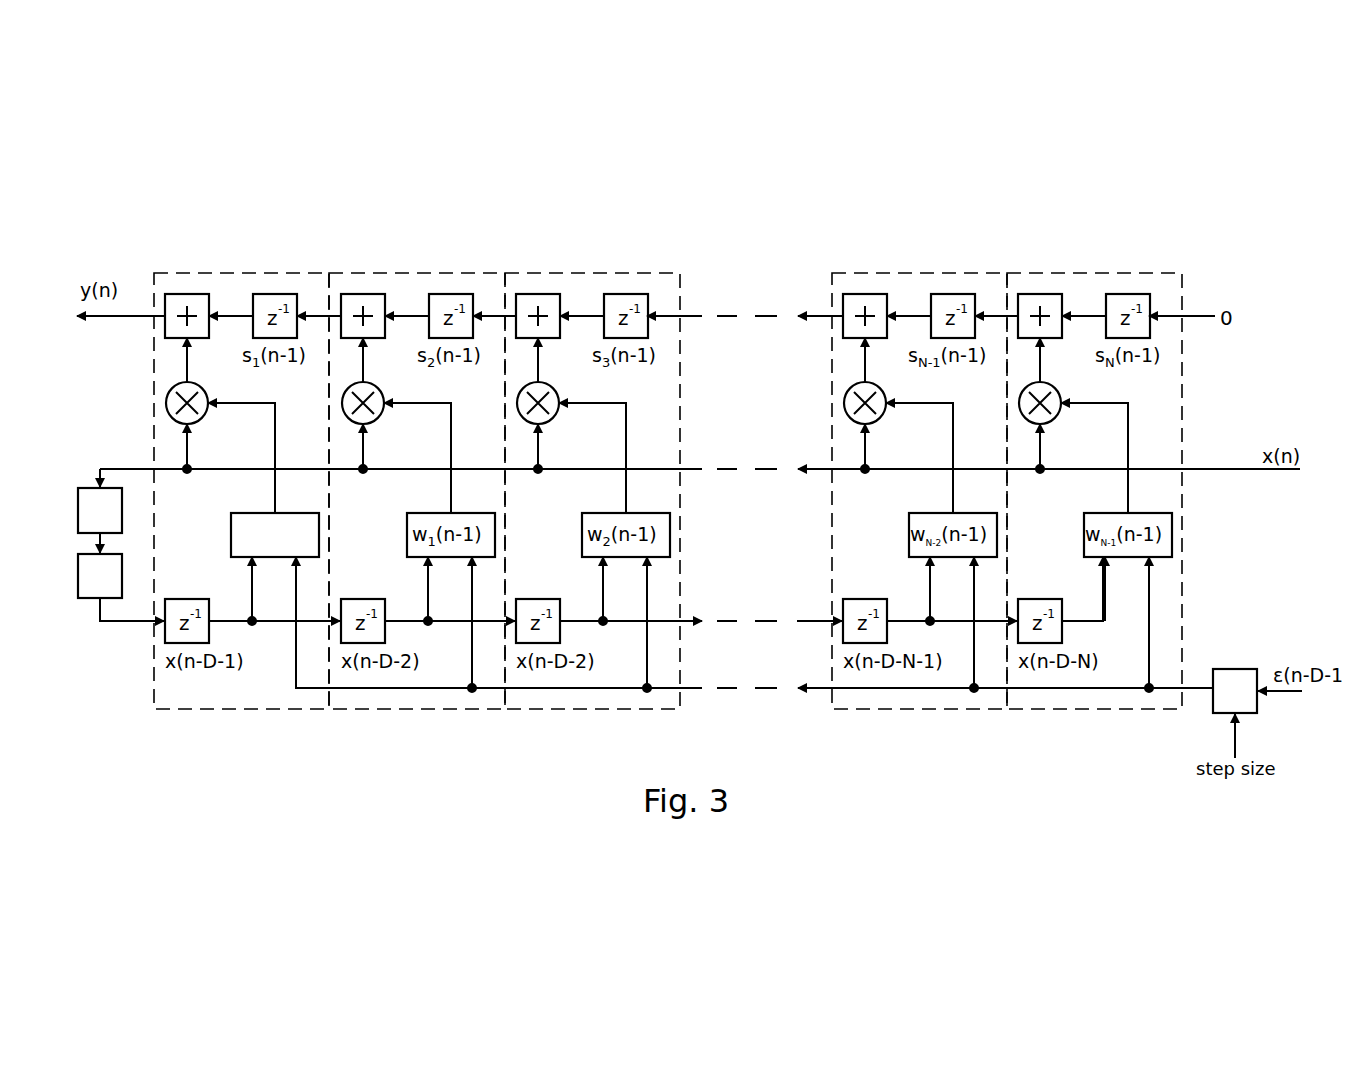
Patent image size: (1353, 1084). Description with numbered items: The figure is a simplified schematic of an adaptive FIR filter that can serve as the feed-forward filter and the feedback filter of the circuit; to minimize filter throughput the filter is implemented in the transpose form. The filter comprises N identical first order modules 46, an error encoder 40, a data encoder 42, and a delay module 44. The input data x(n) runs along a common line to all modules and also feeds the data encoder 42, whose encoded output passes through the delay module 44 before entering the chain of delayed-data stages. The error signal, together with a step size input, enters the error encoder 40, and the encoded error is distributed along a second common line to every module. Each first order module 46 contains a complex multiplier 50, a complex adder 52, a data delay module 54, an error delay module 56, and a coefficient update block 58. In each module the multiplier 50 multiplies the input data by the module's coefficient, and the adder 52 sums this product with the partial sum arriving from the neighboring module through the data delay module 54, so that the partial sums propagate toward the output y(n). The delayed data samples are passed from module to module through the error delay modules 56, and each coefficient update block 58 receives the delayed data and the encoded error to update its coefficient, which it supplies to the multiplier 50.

The error encoder 40 is at (1237, 669).
The data encoder 42 is at (78, 511).
The delay module 44 is at (78, 578).
The first order module 46 is at (178, 271).
The complex multiplier 50 is at (198, 424).
The complex adder 52 is at (196, 342).
The data delay module 54 is at (266, 293).
The error delay module 56 is at (176, 599).
The coefficient update block 58 is at (230, 531).